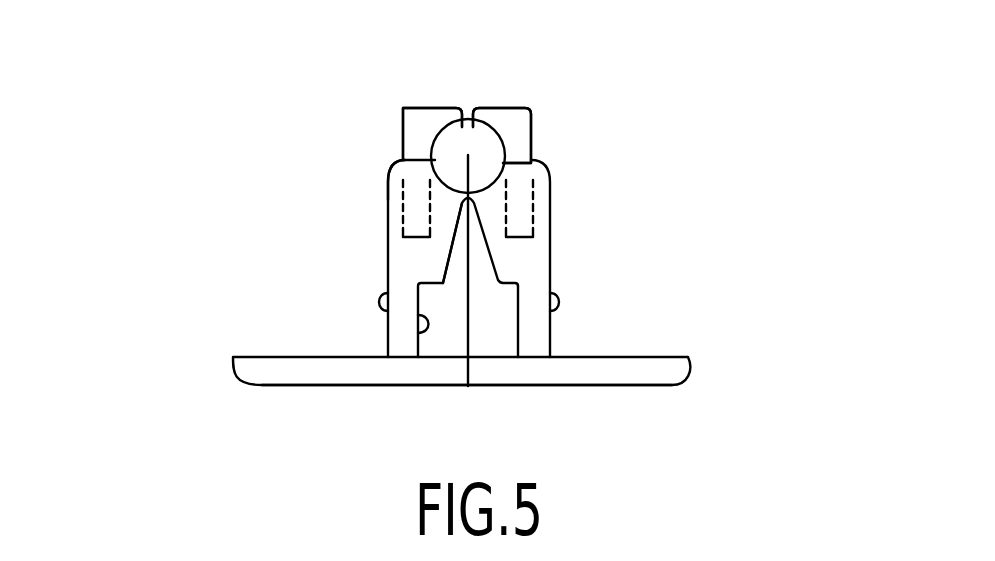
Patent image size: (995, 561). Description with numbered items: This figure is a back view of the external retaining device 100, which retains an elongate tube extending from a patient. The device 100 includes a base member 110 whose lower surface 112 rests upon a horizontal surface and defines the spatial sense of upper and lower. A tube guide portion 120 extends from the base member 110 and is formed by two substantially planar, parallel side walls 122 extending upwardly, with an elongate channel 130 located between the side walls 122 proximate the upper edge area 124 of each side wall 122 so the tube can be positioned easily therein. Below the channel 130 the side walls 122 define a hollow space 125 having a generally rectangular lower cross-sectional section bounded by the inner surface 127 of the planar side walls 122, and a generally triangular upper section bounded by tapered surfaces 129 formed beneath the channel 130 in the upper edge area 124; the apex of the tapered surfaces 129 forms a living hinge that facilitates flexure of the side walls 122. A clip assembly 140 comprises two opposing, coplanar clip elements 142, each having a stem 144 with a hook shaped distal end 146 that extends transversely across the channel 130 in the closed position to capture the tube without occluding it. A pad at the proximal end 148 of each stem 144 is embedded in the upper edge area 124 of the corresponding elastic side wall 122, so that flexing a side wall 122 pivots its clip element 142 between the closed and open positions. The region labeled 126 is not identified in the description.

The external retaining device 100 is at (126, 306).
The base member 110 is at (708, 378).
The lower surface 112 is at (622, 387).
The tube guide portion 120 is at (344, 228).
The side wall 122 is at (532, 340).
The upper edge area 124 is at (388, 180).
The hollow space 125 is at (560, 300).
The tapered slot 126 is at (440, 340).
The inner surface 127 is at (415, 338).
The tapered surface 129 is at (454, 262).
The elongate channel 130 is at (488, 146).
The clip assembly 140 is at (388, 97).
The clip element 142 is at (403, 143).
The stem 144 is at (556, 190).
The hook shaped distal end 146 is at (513, 122).
The proximal end 148 is at (560, 252).